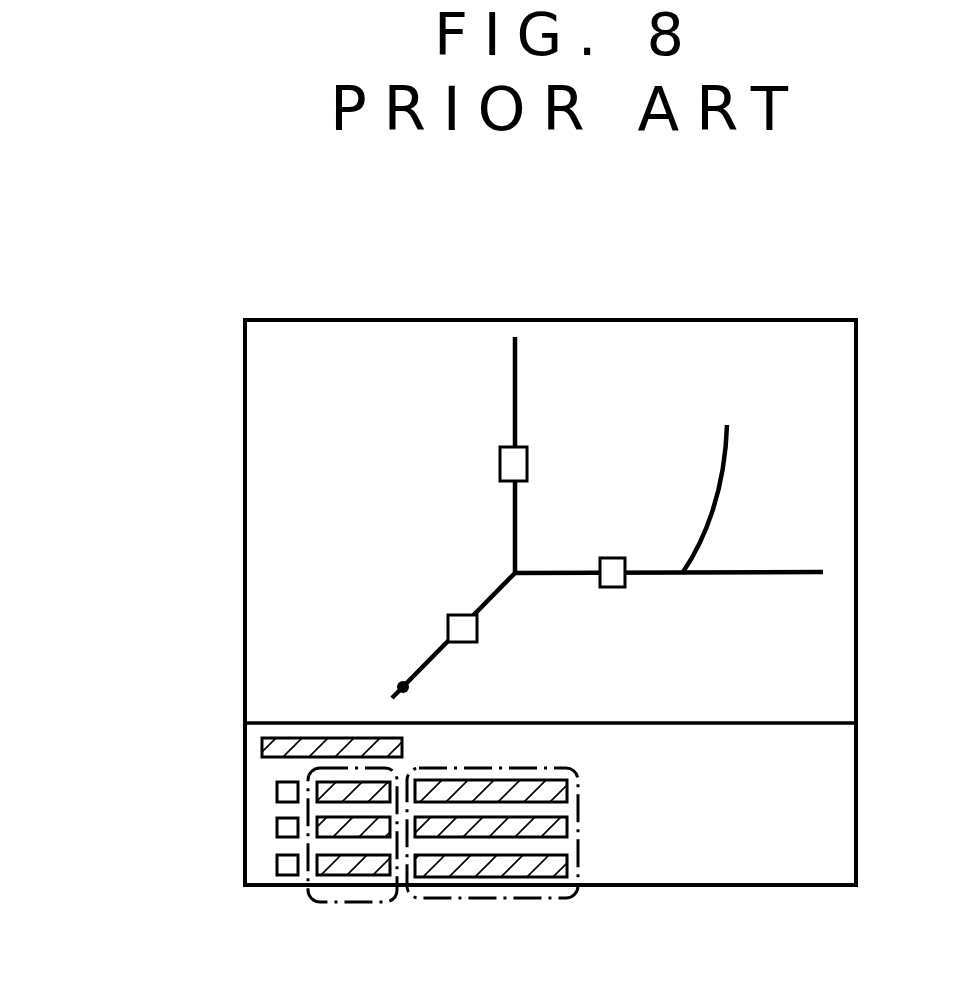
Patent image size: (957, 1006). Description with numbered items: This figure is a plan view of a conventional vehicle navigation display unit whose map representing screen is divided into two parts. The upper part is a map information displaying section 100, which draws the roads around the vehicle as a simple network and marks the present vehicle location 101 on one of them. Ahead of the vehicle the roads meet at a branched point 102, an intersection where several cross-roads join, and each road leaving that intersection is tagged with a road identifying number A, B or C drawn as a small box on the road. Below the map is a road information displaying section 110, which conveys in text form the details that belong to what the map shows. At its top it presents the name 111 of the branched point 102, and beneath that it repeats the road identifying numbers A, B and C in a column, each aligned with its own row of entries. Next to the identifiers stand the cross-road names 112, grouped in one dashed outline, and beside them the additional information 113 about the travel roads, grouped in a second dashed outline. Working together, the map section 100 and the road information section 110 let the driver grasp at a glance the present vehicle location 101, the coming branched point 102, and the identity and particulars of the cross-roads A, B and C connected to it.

The map information displaying section 100 is at (260, 500).
The present vehicle location 101 is at (408, 687).
The branched point 102 is at (518, 576).
The road information displaying section 110 is at (713, 860).
The name of the branched point 111 is at (263, 743).
The cross-road names 112 is at (325, 900).
The additional information about travel roads 113 is at (498, 898).
The road identifying number A is at (530, 477).
The road identifying number B is at (610, 557).
The road identifying number C is at (448, 617).